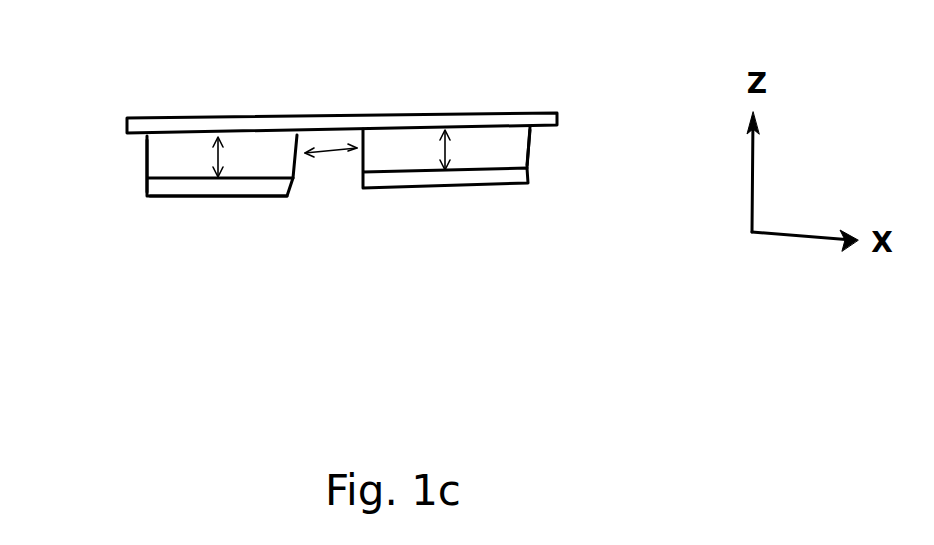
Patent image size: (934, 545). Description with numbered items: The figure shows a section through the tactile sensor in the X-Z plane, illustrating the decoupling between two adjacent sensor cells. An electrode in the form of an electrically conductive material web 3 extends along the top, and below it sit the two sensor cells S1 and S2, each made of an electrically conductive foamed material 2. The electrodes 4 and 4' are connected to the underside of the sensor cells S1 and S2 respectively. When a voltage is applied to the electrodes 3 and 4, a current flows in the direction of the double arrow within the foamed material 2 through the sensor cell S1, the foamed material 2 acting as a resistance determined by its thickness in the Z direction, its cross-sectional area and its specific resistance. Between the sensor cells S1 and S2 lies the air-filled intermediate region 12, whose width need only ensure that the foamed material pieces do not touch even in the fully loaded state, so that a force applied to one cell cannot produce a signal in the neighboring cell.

The electrically conductive material web 3 is at (190, 115).
The electrically conductive foamed material 2 is at (145, 170).
The electrically conductive material web 4 is at (218, 218).
The electrically conductive material web 4' is at (446, 208).
The intermediate region 12 is at (328, 168).
The sensor cell S1 is at (142, 152).
The sensor cell S2 is at (537, 148).